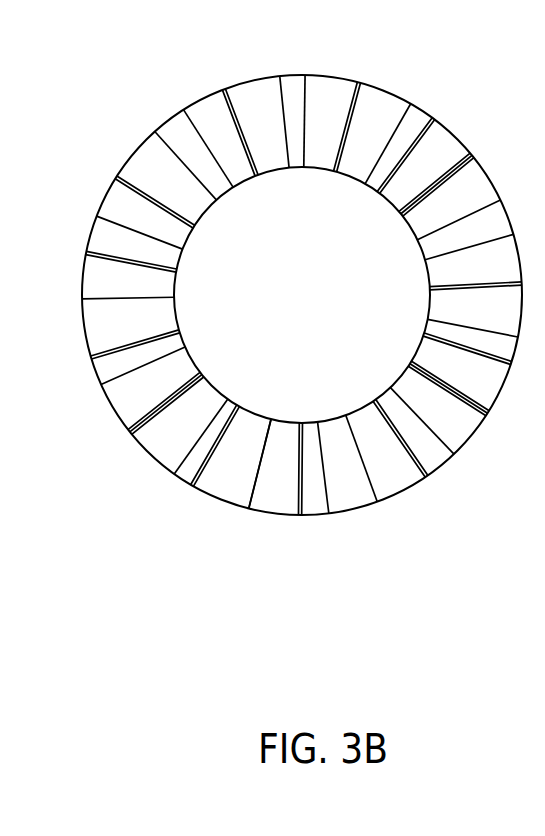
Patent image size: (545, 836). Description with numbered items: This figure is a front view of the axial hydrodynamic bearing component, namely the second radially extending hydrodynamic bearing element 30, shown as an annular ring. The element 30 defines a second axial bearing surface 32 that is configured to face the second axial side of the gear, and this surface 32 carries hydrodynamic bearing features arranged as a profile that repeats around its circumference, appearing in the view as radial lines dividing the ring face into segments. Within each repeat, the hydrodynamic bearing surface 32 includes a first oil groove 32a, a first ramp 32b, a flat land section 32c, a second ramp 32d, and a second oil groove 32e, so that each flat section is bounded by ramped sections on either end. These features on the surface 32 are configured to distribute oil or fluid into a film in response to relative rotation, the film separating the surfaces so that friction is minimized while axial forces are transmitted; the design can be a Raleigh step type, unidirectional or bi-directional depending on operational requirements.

The second radially extending hydrodynamic bearing element 30 is at (179, 138).
The second axial bearing surface 32 is at (398, 128).
The first oil groove 32a is at (128, 318).
The first ramp 32b is at (135, 304).
The flat land section 32c is at (120, 352).
The second ramp 32d is at (146, 392).
The second oil groove 32e is at (260, 464).